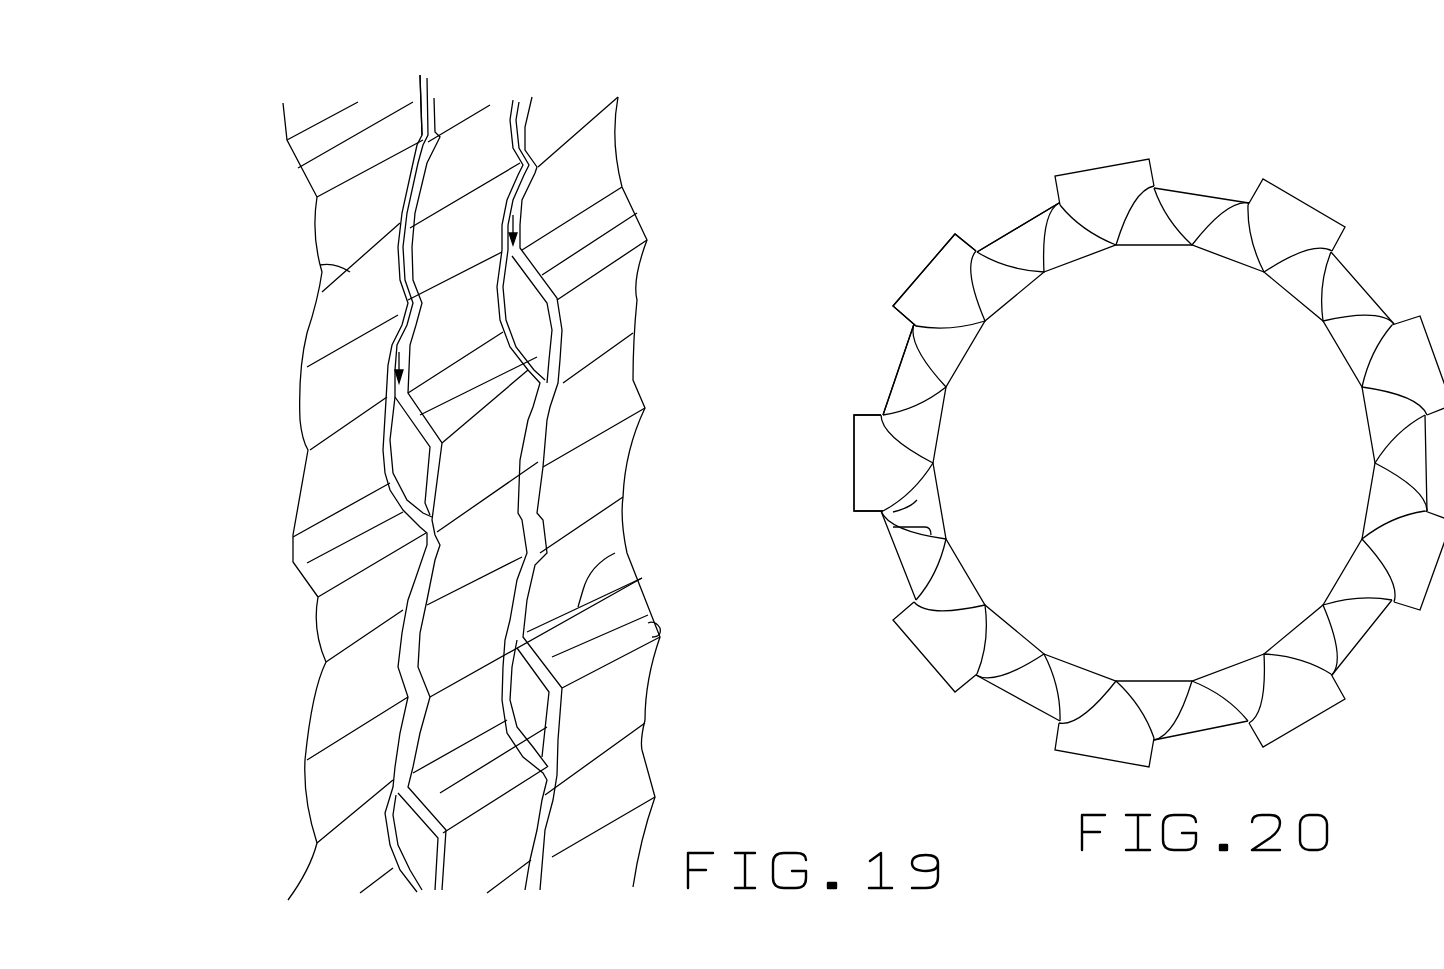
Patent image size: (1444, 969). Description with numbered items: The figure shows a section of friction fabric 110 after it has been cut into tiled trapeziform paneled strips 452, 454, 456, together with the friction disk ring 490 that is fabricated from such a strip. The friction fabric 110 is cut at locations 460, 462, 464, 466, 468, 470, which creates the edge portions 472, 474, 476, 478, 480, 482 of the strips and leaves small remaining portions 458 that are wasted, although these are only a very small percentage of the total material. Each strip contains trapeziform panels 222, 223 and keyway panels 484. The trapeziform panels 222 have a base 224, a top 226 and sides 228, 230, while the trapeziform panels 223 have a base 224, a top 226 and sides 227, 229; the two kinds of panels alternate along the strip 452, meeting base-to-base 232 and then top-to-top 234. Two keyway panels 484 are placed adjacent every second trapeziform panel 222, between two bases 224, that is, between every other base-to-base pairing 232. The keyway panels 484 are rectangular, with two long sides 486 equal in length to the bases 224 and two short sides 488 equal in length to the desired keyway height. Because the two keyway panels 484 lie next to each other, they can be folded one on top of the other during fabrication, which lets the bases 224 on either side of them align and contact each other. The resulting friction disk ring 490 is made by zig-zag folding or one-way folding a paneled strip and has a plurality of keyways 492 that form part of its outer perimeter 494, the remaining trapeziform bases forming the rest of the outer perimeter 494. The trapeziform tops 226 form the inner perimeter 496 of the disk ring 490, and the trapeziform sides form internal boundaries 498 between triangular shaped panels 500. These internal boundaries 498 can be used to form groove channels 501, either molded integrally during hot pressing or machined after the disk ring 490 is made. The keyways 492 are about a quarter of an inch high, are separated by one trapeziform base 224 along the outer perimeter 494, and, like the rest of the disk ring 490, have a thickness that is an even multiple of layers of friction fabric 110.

In FIG. 19, the friction fabric 110 is at (290, 897).
In FIG. 19, the trapeziform panel 222 is at (340, 695).
In FIG. 19, the trapeziform panel 223 is at (365, 595).
In FIG. 19, the base 224 is at (333, 742).
In FIG. 19, the top 226 is at (350, 657).
In FIG. 20, the top 226 is at (1000, 318).
In FIG. 19, the side 227 is at (390, 622).
In FIG. 19, the side 228 is at (400, 567).
In FIG. 20, the side 228 is at (930, 585).
In FIG. 19, the side 229 is at (310, 710).
In FIG. 19, the side 230 is at (317, 652).
In FIG. 20, the side 230 is at (940, 610).
In FIG. 19, the base-to-base pairing 232 is at (325, 350).
In FIG. 19, the top-to-top pairing 234 is at (320, 265).
In FIG. 19, the trapeziform paneled strip 452 is at (350, 900).
In FIG. 19, the trapeziform paneled strip 454 is at (468, 900).
In FIG. 19, the trapeziform paneled strip 456 is at (607, 898).
In FIG. 19, the remaining portion 458 is at (407, 447).
In FIG. 19, the cutting location 460 is at (278, 88).
In FIG. 19, the cutting location 462 is at (410, 80).
In FIG. 19, the cutting location 464 is at (431, 93).
In FIG. 19, the cutting location 466 is at (517, 82).
In FIG. 19, the cutting location 468 is at (530, 90).
In FIG. 19, the cutting location 470 is at (624, 90).
In FIG. 19, the edge portion 472 is at (310, 183).
In FIG. 19, the edge portion 474 is at (400, 213).
In FIG. 19, the edge portion 476 is at (292, 533).
In FIG. 19, the edge portion 478 is at (530, 420).
In FIG. 19, the edge portion 480 is at (560, 387).
In FIG. 19, the edge portion 482 is at (625, 475).
In FIG. 19, the keyway panel 484 is at (637, 625).
In FIG. 19, the long side 486 is at (598, 630).
In FIG. 19, the short side 488 is at (600, 660).
In FIG. 20, the friction disk ring 490 is at (1000, 208).
In FIG. 20, the keyway 492 is at (930, 295).
In FIG. 20, the outer perimeter 494 is at (893, 312).
In FIG. 20, the inner perimeter 496 is at (1022, 285).
In FIG. 20, the internal boundary 498 is at (888, 524).
In FIG. 20, the triangular shaped panel 500 is at (917, 385).
In FIG. 20, the groove channel 501 is at (935, 430).